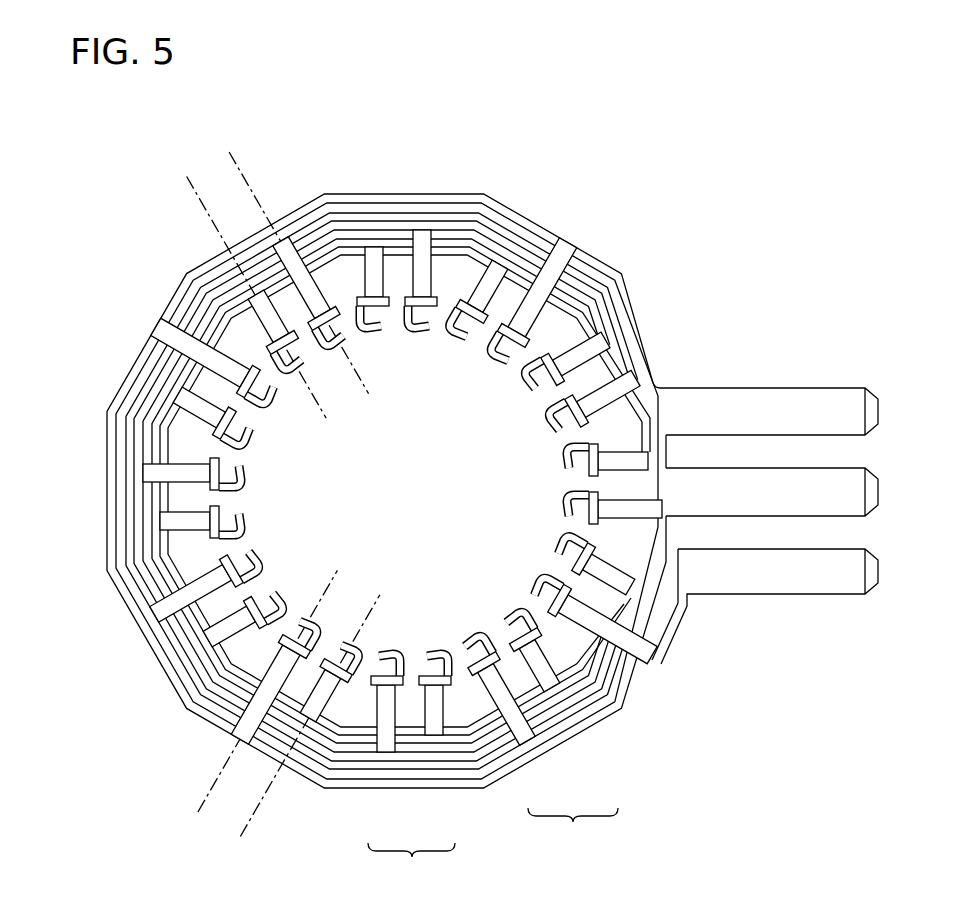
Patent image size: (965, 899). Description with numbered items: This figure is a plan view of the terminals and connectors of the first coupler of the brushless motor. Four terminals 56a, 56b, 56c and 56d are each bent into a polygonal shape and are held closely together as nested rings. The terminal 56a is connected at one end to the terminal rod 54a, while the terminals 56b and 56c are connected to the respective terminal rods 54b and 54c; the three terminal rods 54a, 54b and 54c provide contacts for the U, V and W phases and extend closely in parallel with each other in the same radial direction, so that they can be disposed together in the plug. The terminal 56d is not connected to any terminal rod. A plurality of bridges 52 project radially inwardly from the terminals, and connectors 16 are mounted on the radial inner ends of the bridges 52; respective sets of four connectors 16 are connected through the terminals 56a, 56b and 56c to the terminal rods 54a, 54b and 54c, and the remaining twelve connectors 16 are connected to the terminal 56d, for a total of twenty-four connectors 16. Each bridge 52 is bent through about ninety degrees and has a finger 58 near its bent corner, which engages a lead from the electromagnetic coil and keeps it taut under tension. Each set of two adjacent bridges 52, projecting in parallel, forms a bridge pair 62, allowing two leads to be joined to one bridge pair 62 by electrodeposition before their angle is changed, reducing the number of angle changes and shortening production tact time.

The connector 16 is at (538, 378).
The bridge 52 is at (560, 255).
The terminal rod 54a is at (853, 413).
The terminal rod 54b is at (853, 491).
The terminal rod 54c is at (853, 572).
The polygonal terminal 56a is at (590, 268).
The polygonal terminal 56b is at (398, 240).
The polygonal terminal 56c is at (529, 220).
The polygonal terminal 56d is at (585, 318).
The finger 58 is at (612, 343).
The bridge pair 62 is at (493, 846).